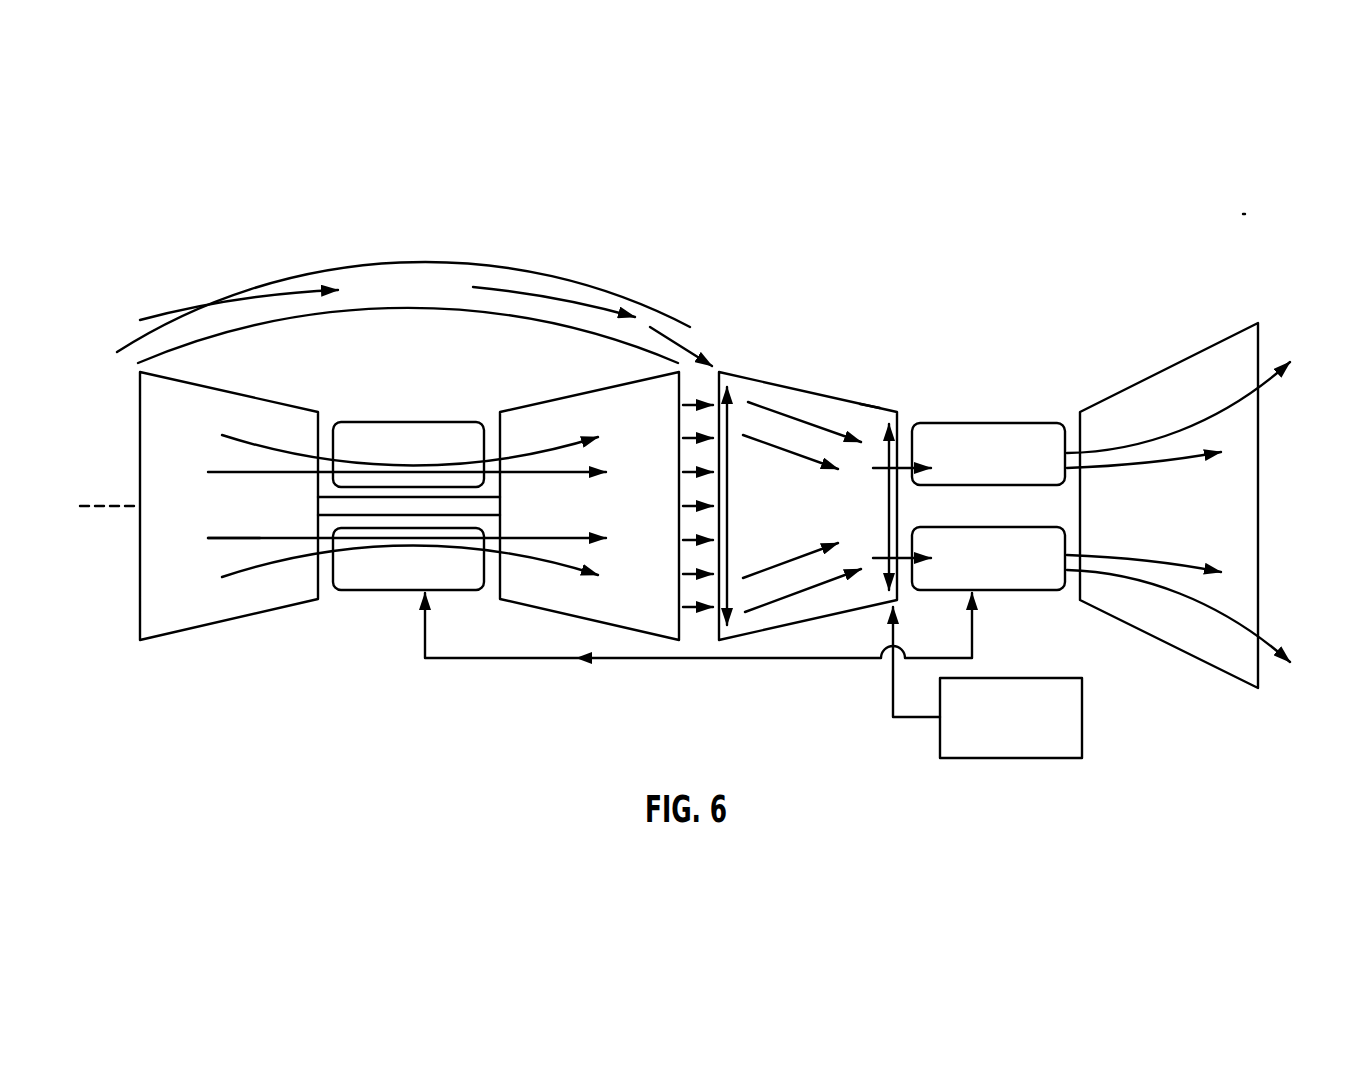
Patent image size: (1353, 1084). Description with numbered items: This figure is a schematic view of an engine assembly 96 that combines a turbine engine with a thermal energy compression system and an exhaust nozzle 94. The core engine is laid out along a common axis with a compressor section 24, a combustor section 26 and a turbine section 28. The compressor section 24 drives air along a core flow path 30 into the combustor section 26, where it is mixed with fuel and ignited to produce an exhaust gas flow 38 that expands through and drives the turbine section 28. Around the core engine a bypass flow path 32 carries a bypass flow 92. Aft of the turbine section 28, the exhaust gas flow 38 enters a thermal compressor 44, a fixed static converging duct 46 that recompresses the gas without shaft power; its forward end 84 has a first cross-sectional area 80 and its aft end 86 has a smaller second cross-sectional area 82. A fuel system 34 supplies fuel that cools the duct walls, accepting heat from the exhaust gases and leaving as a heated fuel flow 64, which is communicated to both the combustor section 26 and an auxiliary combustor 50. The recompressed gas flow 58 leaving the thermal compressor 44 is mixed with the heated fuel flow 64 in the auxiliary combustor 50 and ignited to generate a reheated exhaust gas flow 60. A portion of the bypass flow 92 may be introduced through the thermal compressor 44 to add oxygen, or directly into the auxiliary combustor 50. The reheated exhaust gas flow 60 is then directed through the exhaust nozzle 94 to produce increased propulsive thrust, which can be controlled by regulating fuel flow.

The compressor section 24 is at (230, 622).
The combustor section 26 is at (378, 422).
The turbine section 28 is at (547, 398).
The core flow path 30 is at (222, 538).
The bypass flow path 32 is at (431, 286).
The fuel system 34 is at (1028, 678).
The exhaust gas flow 38 is at (703, 622).
The thermal compressor 44 is at (810, 388).
The converging duct 46 is at (877, 395).
The auxiliary combustor 50 is at (1000, 422).
The recompressed gas flow 58 is at (901, 468).
The reheated exhaust gas flow 60 is at (1070, 466).
The heated fuel flow 64 is at (618, 662).
The first cross-sectional area 80 is at (740, 405).
The second cross-sectional area 82 is at (886, 574).
The forward end 84 is at (712, 646).
The aft end 86 is at (904, 586).
The bypass flow 92 is at (563, 298).
The exhaust nozzle 94 is at (1158, 395).
The engine assembly 96 is at (1246, 212).